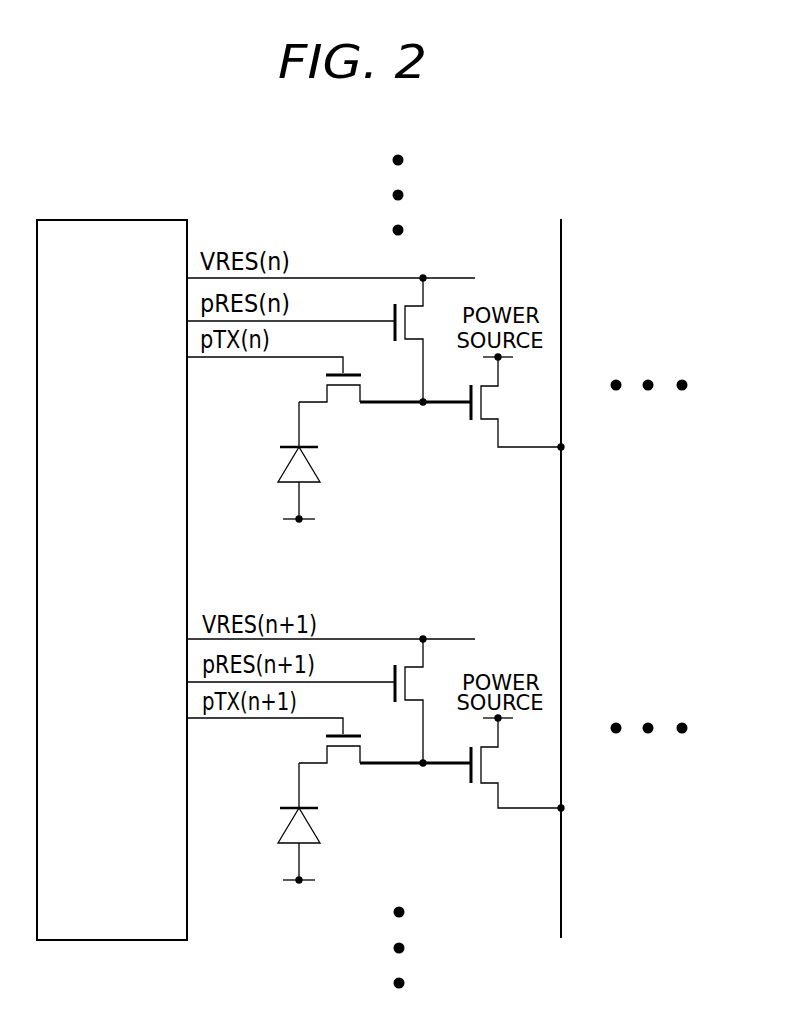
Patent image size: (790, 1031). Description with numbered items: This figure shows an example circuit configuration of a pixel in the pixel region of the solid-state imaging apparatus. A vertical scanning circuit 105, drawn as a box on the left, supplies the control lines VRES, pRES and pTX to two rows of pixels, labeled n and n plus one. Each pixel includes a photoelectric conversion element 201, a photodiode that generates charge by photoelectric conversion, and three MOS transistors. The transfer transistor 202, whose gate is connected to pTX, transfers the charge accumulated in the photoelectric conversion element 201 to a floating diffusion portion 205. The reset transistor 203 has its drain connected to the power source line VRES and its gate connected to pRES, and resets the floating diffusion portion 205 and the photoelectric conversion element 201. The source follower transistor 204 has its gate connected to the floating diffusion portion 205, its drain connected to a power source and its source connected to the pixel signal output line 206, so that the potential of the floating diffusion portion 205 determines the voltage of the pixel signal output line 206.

The vertical scanning circuit 105 is at (78, 217).
The photoelectric conversion element 201 is at (312, 460).
The transfer transistor 202 is at (325, 383).
The reset transistor 203 is at (420, 322).
The source follower transistor 204 is at (472, 423).
The floating diffusion portion 205 is at (423, 405).
The pixel signal output line 206 is at (561, 872).